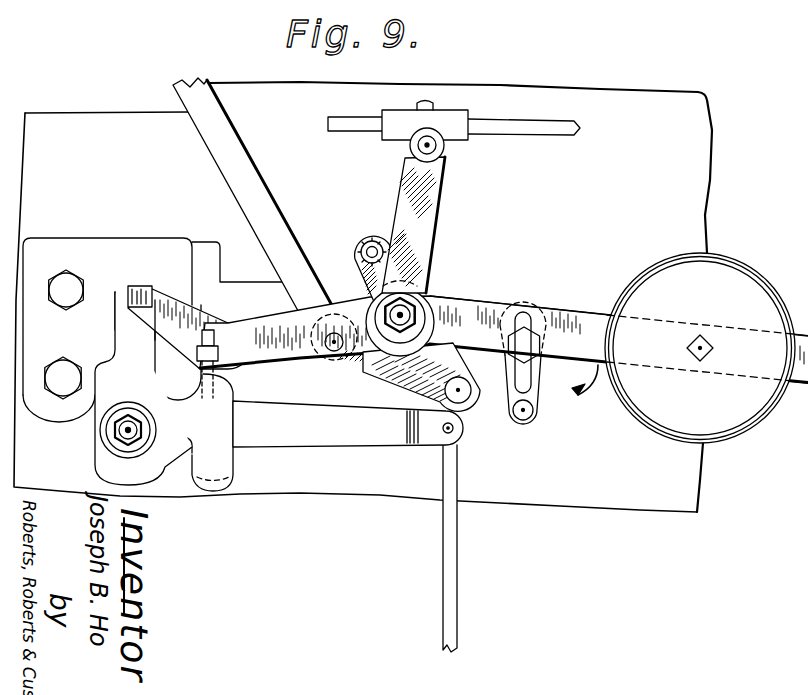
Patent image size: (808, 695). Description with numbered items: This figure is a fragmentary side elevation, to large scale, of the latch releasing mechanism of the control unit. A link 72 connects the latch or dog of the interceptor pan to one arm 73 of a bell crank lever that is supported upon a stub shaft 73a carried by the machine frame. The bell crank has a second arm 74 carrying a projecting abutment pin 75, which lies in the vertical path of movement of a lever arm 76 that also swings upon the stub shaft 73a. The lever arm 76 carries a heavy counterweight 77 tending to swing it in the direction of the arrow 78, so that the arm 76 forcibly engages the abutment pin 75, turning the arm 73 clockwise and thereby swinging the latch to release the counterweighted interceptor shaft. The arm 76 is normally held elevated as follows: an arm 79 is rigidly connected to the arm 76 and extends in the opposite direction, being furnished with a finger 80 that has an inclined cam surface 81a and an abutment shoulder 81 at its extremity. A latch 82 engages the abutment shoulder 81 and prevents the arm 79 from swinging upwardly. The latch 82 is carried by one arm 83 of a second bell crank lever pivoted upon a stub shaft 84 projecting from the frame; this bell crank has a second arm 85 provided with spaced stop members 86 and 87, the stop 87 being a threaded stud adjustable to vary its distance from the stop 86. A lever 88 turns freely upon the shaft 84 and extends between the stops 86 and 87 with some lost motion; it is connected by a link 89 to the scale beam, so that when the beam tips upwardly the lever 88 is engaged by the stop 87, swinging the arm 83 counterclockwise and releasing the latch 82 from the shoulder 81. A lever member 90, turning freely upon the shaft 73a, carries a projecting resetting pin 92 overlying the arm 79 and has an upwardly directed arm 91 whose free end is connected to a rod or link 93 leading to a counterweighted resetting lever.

The link 72 is at (243, 178).
The arm of bell crank lever 73 is at (365, 360).
The stub shaft 73a is at (427, 293).
The second arm of bell crank lever 74 is at (432, 377).
The abutment pin 75 is at (460, 398).
The lever arm 76 is at (470, 307).
The counterweight 77 is at (731, 278).
The arrow 78 is at (591, 391).
The arm 79 is at (270, 312).
The finger 80 is at (168, 297).
The abutment shoulder 81 is at (152, 287).
The inclined cam surface 81a is at (172, 347).
The latch 82 is at (130, 300).
The arm of bell crank lever 83 is at (122, 343).
The stub shaft 84 is at (125, 430).
The second arm of bell crank lever 85 is at (223, 438).
The stop member 86 is at (223, 488).
The stop member 87 is at (215, 383).
The lever 88 is at (322, 446).
The link 89 is at (443, 548).
The lever member 90 is at (367, 267).
The upwardly directed arm 91 is at (422, 258).
The resetting pin 92 is at (373, 240).
The rod or link 93 is at (525, 122).